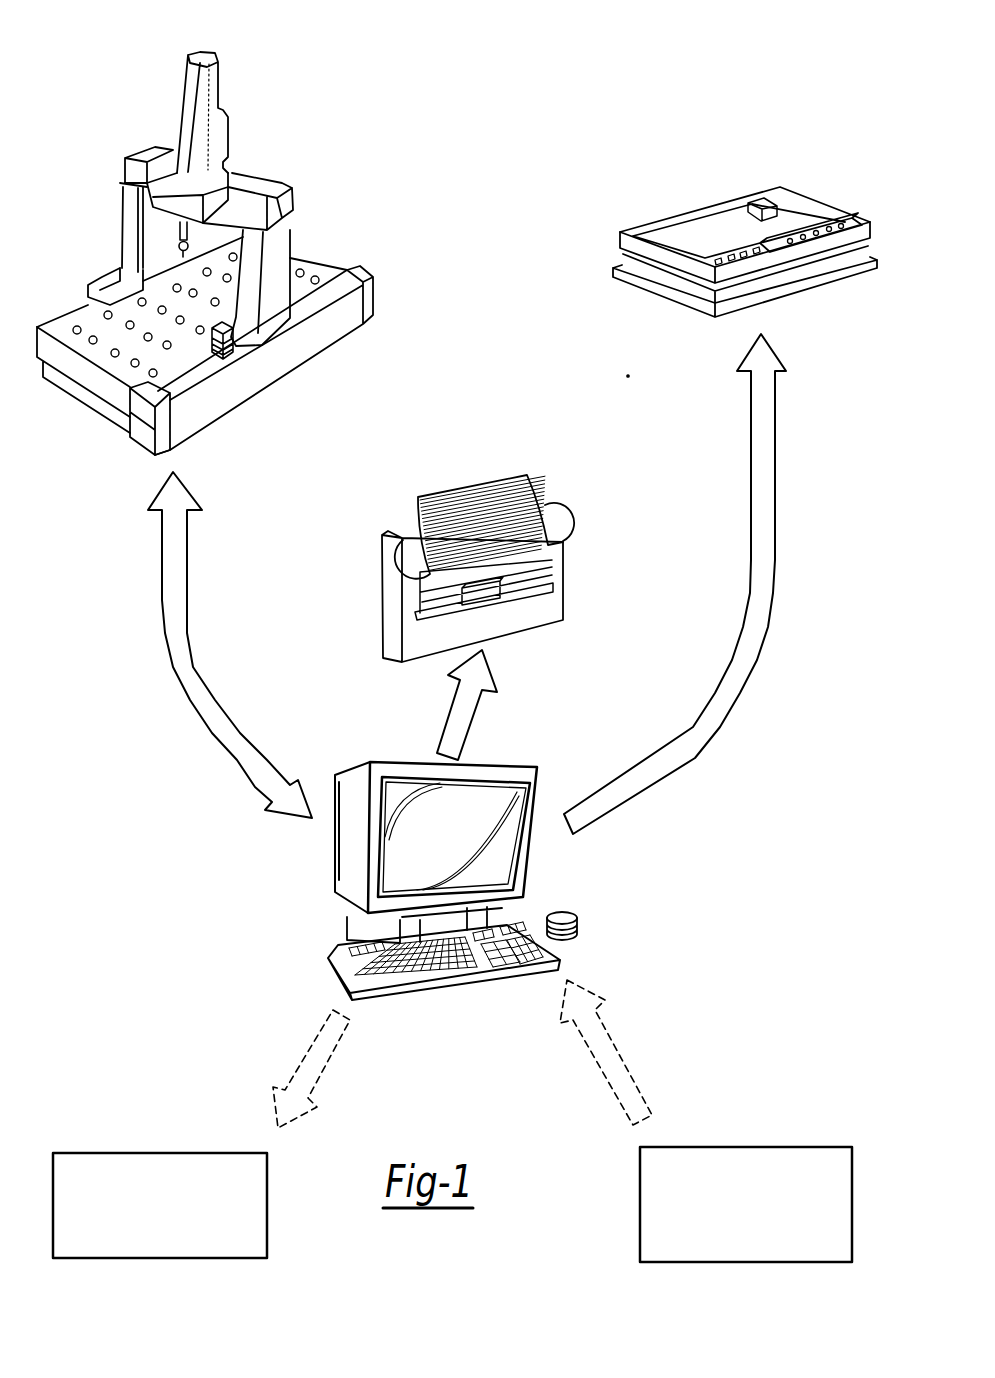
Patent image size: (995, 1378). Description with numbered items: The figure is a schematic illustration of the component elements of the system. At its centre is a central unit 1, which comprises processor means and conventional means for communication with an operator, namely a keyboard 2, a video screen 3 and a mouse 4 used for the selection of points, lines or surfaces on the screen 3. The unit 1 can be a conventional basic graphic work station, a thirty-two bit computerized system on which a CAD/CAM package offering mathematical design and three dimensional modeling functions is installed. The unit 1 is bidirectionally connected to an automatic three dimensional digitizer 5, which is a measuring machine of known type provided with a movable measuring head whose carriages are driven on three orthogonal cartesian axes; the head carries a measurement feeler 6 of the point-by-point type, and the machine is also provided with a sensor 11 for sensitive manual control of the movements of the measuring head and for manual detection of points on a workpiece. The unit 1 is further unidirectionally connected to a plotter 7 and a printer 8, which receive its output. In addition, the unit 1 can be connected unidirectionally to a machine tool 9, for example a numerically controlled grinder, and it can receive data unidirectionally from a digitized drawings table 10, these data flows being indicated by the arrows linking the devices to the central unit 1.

The central unit 1 is at (538, 890).
The keyboard 2 is at (330, 958).
The video screen 3 is at (540, 808).
The mouse 4 is at (578, 920).
The automatic three dimensional digitizer 5 is at (323, 250).
The measurement feeler 6 is at (176, 258).
The plotter 7 is at (672, 210).
The printer 8 is at (392, 518).
The machine tool 9 is at (150, 1153).
The digitized drawings table 10 is at (748, 1147).
The sensor 11 is at (257, 352).